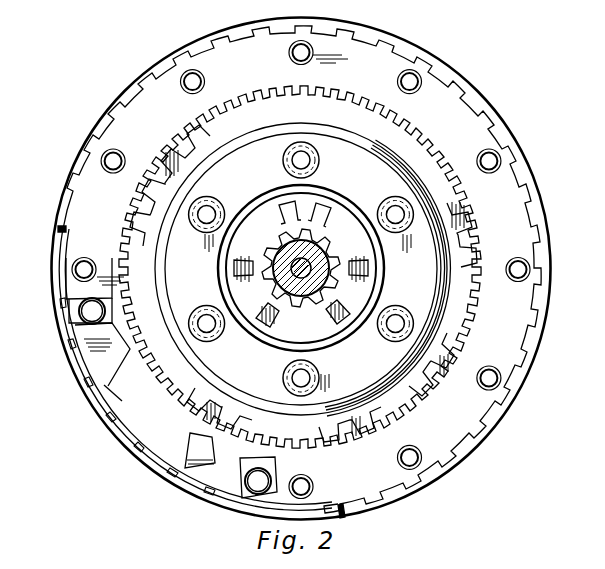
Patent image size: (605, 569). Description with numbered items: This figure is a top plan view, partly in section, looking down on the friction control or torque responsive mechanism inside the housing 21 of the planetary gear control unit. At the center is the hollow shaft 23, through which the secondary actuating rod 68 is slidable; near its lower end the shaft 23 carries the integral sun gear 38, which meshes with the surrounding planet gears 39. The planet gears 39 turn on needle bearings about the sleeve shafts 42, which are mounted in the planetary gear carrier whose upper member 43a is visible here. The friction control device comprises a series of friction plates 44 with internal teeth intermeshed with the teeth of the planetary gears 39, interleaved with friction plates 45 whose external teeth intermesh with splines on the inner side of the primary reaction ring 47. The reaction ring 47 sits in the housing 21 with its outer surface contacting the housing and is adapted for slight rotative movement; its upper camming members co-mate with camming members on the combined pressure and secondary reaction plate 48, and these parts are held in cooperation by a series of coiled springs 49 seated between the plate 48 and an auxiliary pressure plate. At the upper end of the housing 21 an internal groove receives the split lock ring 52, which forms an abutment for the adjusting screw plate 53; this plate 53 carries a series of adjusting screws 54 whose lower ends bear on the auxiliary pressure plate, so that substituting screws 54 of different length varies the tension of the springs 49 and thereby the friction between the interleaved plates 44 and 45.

The housing 21 is at (551, 252).
The shaft 23 is at (330, 262).
The sun gear 38 is at (286, 224).
The planet gears 39 is at (171, 137).
The sleeve shafts 42 is at (295, 378).
The upper member of the planetary gear carrier 43a is at (393, 363).
The friction plates 44 is at (127, 395).
The friction plates 45 is at (100, 352).
The primary reaction ring 47 is at (108, 395).
The combined pressure and secondary reaction plate 48 is at (80, 322).
The coiled springs 49 is at (78, 312).
The split lock ring 52 is at (463, 445).
The adjusting screw plate 53 is at (468, 403).
The adjusting screws 54 is at (289, 50).
The secondary actuating rod 68 is at (301, 282).